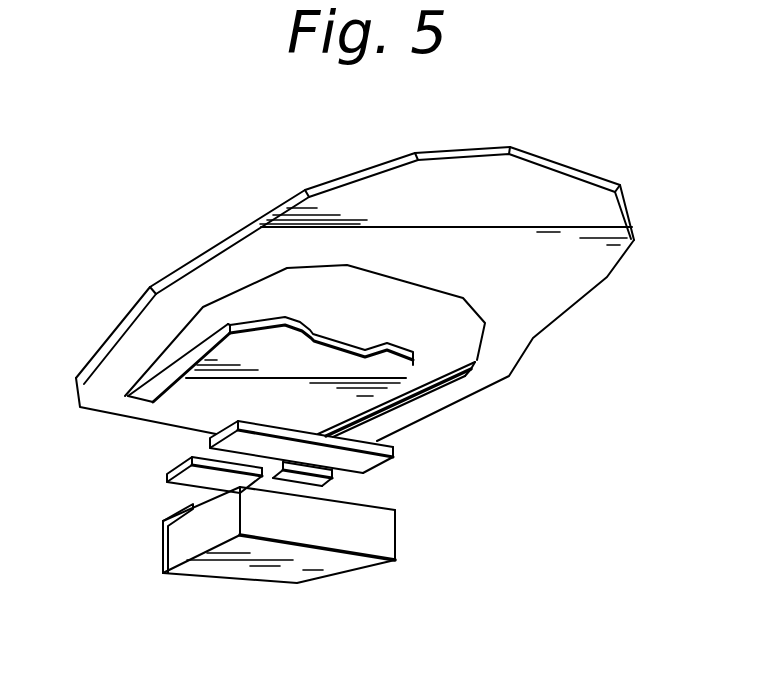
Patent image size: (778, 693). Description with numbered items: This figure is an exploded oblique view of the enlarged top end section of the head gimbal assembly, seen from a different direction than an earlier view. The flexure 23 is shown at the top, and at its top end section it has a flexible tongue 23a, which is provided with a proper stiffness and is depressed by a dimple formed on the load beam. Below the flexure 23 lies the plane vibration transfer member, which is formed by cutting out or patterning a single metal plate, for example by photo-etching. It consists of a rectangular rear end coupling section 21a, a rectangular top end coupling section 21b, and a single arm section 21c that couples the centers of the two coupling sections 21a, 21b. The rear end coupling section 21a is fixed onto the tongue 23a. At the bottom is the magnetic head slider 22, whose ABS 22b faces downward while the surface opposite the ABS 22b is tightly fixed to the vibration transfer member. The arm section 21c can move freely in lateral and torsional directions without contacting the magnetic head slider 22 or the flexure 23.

The flexure 23 is at (593, 277).
The flexible tongue 23a is at (390, 365).
The rear end coupling section 21a is at (388, 463).
The top end coupling section 21b is at (165, 488).
The arm section 21c is at (333, 478).
The magnetic head slider 22 is at (342, 537).
The ABS 22b is at (263, 567).